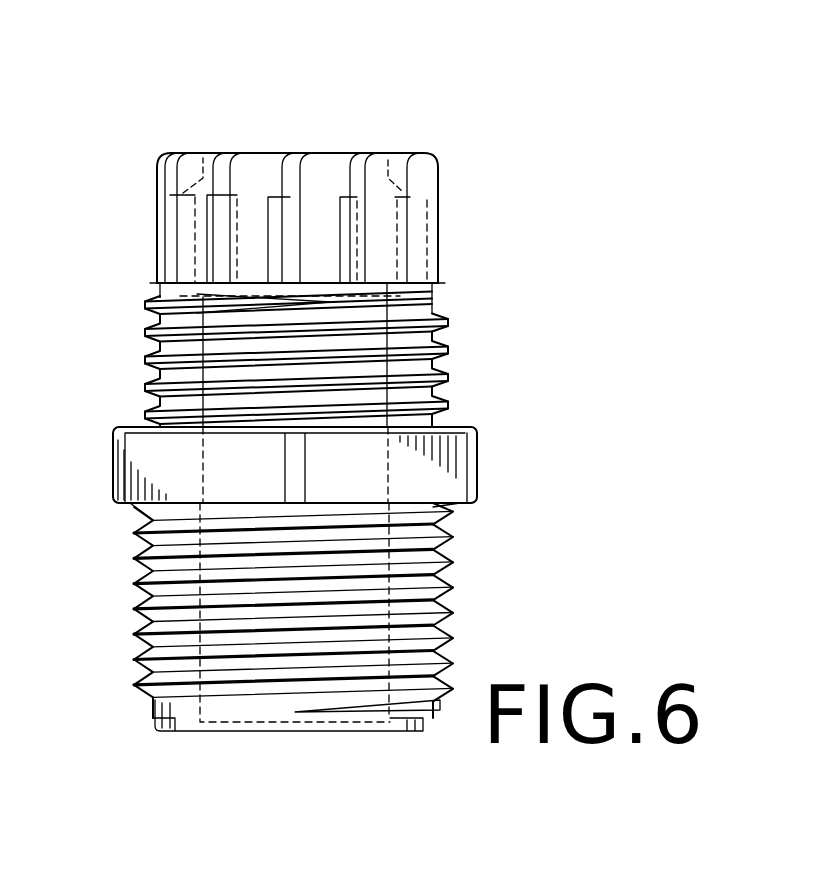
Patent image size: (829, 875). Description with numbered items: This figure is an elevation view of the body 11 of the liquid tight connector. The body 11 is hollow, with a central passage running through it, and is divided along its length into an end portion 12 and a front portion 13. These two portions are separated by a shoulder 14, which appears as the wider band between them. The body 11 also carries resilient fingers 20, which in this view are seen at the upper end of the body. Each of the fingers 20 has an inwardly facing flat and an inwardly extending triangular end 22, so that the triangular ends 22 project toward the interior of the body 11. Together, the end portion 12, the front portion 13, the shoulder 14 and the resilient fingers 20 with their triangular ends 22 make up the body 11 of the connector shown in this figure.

The body 11 is at (446, 287).
The end portion 12 is at (453, 621).
The front portion 13 is at (136, 347).
The shoulder 14 is at (113, 450).
The resilient fingers 20 is at (388, 230).
The triangular ends 22 is at (400, 156).